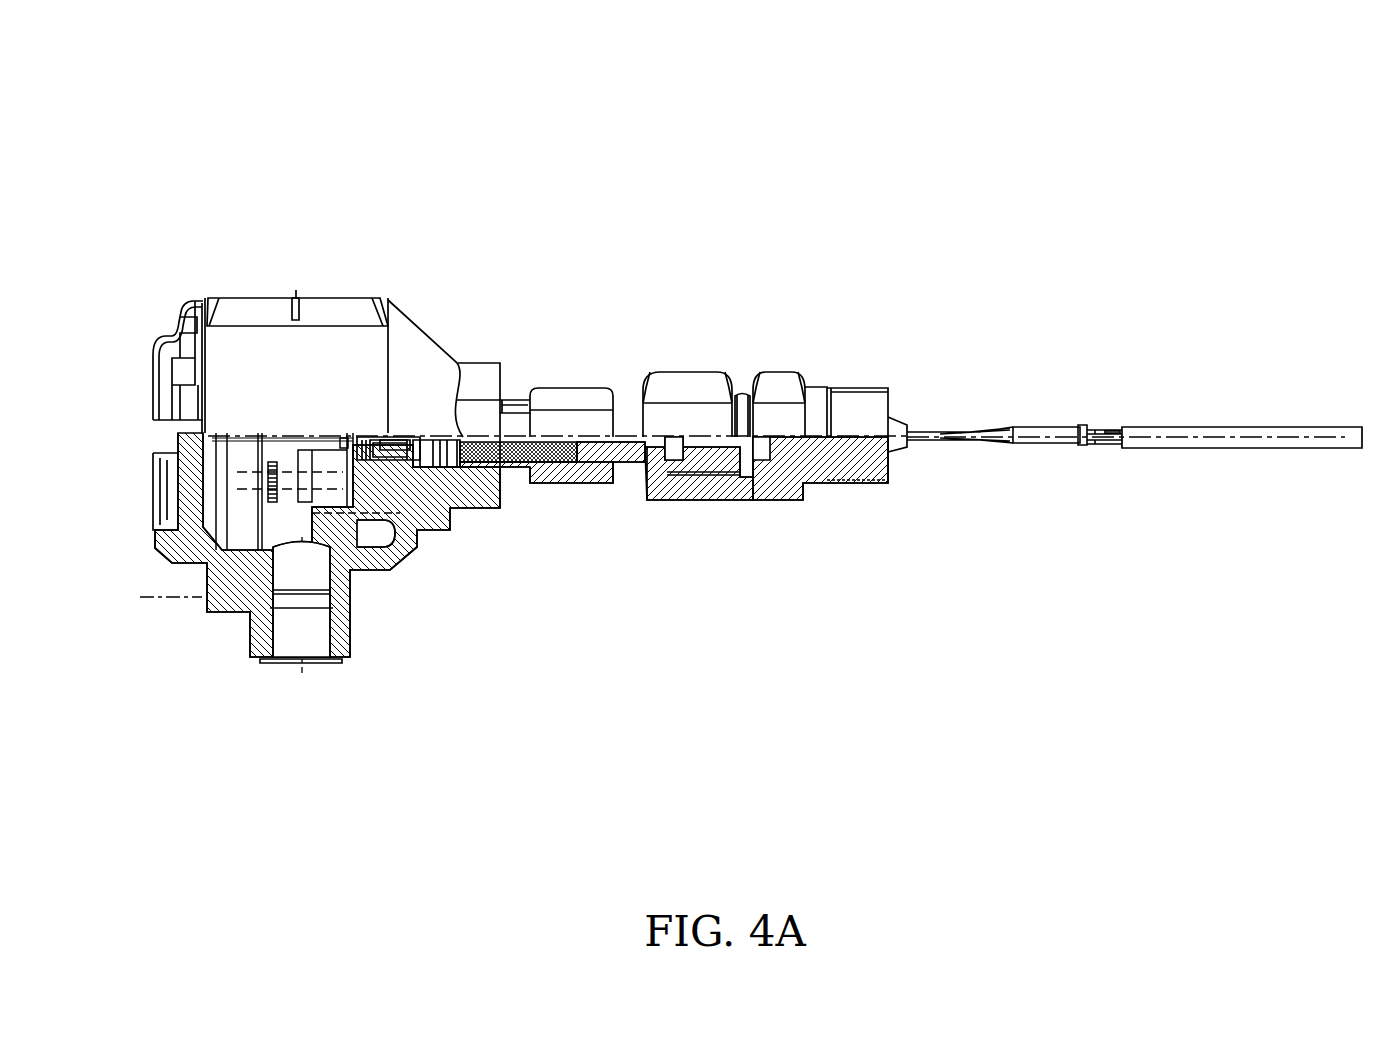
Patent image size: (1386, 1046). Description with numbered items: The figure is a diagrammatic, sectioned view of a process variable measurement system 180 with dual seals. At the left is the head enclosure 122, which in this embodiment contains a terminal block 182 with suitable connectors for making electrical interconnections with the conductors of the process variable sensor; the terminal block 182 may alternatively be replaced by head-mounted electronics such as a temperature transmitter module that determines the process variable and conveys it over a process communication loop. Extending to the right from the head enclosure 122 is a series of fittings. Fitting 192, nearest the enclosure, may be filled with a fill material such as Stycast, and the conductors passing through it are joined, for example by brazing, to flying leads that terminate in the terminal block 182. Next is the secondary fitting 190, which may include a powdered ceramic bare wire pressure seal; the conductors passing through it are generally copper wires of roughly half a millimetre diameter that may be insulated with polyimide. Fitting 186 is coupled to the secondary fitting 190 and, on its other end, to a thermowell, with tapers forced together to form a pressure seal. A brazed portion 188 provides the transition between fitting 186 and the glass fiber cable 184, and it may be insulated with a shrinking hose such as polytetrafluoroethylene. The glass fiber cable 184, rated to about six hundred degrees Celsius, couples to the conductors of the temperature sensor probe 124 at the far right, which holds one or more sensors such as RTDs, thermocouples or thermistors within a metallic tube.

The process variable measurement system 180 is at (313, 123).
The head enclosure 122 is at (427, 335).
The terminal block 182 is at (332, 500).
The fitting 192 is at (594, 388).
The secondary fitting 190 is at (718, 372).
The fitting 186 is at (853, 487).
The brazed portion 188 is at (935, 440).
The glass fiber cable 184 is at (1040, 428).
The temperature sensor probe 124 is at (1212, 426).